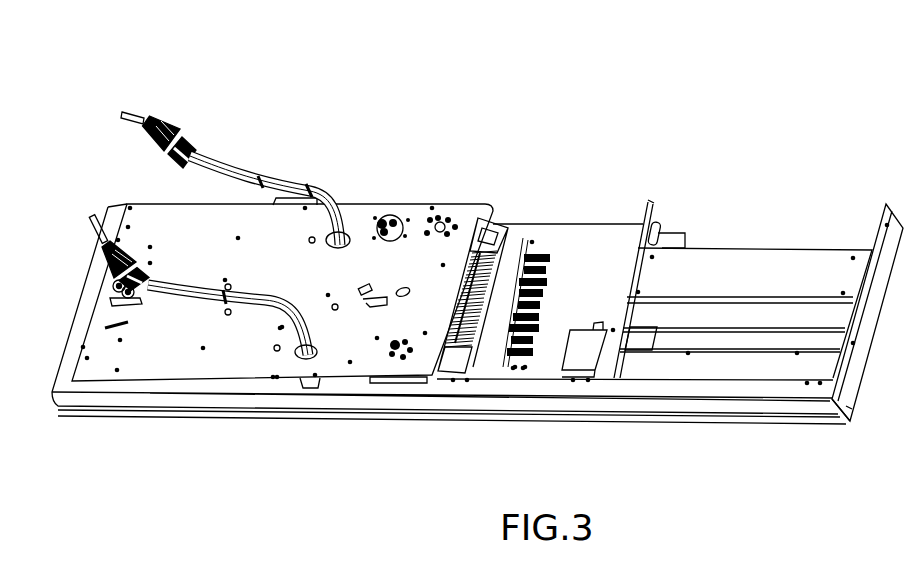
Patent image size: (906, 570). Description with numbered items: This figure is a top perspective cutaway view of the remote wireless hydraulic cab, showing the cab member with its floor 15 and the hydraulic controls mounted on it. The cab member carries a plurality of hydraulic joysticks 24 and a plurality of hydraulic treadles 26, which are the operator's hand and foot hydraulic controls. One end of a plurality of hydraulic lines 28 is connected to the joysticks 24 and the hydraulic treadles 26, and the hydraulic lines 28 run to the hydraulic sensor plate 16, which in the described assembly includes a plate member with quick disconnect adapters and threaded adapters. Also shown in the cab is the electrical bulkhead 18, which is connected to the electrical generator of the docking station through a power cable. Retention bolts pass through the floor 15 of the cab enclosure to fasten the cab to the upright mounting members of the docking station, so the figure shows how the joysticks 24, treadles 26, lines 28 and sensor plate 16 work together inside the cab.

The floor 15 is at (182, 365).
The hydraulic sensor plate 16 is at (545, 236).
The electrical bulkhead 18 is at (403, 217).
The hydraulic joysticks 24 is at (138, 118).
The hydraulic treadles 26 is at (120, 300).
The hydraulic lines 28 is at (292, 180).